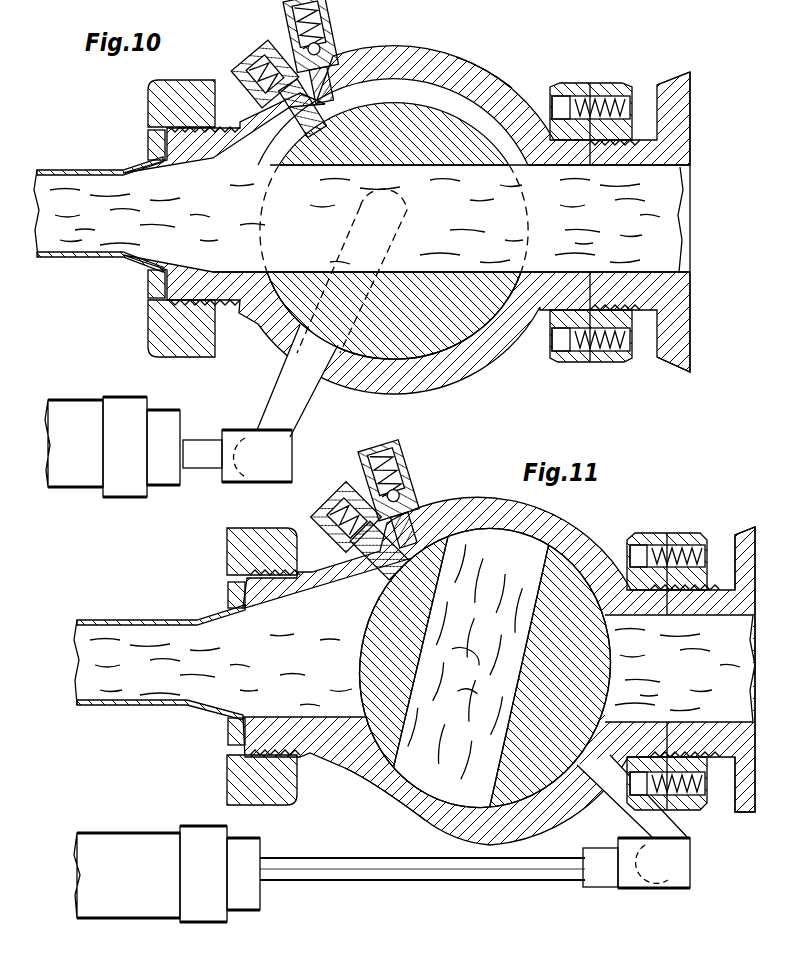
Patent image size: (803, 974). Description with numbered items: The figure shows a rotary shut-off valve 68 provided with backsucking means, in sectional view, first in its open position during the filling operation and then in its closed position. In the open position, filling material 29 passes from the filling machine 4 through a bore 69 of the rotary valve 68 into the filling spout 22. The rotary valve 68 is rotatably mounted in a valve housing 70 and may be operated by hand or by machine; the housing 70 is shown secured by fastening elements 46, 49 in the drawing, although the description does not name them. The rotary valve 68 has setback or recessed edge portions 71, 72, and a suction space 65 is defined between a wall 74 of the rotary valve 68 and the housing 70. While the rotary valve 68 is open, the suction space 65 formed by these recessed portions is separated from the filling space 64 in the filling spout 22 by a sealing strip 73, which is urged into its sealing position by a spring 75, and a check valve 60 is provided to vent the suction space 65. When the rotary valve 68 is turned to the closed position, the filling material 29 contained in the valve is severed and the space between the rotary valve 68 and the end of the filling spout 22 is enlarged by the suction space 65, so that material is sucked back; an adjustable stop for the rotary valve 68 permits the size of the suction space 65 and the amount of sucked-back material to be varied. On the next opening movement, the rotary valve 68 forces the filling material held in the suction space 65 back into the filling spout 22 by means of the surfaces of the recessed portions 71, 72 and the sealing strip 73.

In FIG. 10, the filling machine 4 is at (675, 337).
In FIG. 11, the filling machine 4 is at (750, 527).
In FIG. 10, the filling spout 22 is at (62, 258).
In FIG. 11, the filling spout 22 is at (100, 620).
In FIG. 10, the filling material 29 is at (327, 248).
In FIG. 11, the filling material 29 is at (705, 683).
In FIG. 10, the spring-loaded set screw 46 is at (605, 360).
In FIG. 11, the spring-loaded set screw 46 is at (690, 540).
In FIG. 10, the coupling nut 49 is at (150, 330).
In FIG. 11, the coupling nut 49 is at (240, 557).
In FIG. 10, the check valve 60 is at (328, 48).
In FIG. 11, the check valve 60 is at (403, 500).
In FIG. 10, the filling space 64 is at (140, 183).
In FIG. 11, the filling space 64 is at (197, 637).
In FIG. 10, the suction space 65 is at (415, 85).
In FIG. 11, the suction space 65 is at (343, 752).
In FIG. 10, the rotary shut-off valve 68 is at (483, 313).
In FIG. 11, the rotary shut-off valve 68 is at (568, 583).
In FIG. 10, the bore 69 is at (472, 275).
In FIG. 10, the valve housing 70 is at (510, 107).
In FIG. 10, the setback or recessed edge portion 71 is at (263, 140).
In FIG. 11, the setback or recessed edge portion 71 is at (355, 555).
In FIG. 10, the setback or recessed edge portion 72 is at (312, 160).
In FIG. 11, the setback or recessed edge portion 72 is at (395, 735).
In FIG. 10, the sealing strip 73 is at (300, 85).
In FIG. 11, the sealing strip 73 is at (348, 553).
In FIG. 10, the wall of the rotary valve 74 is at (478, 112).
In FIG. 10, the spring 75 is at (258, 62).